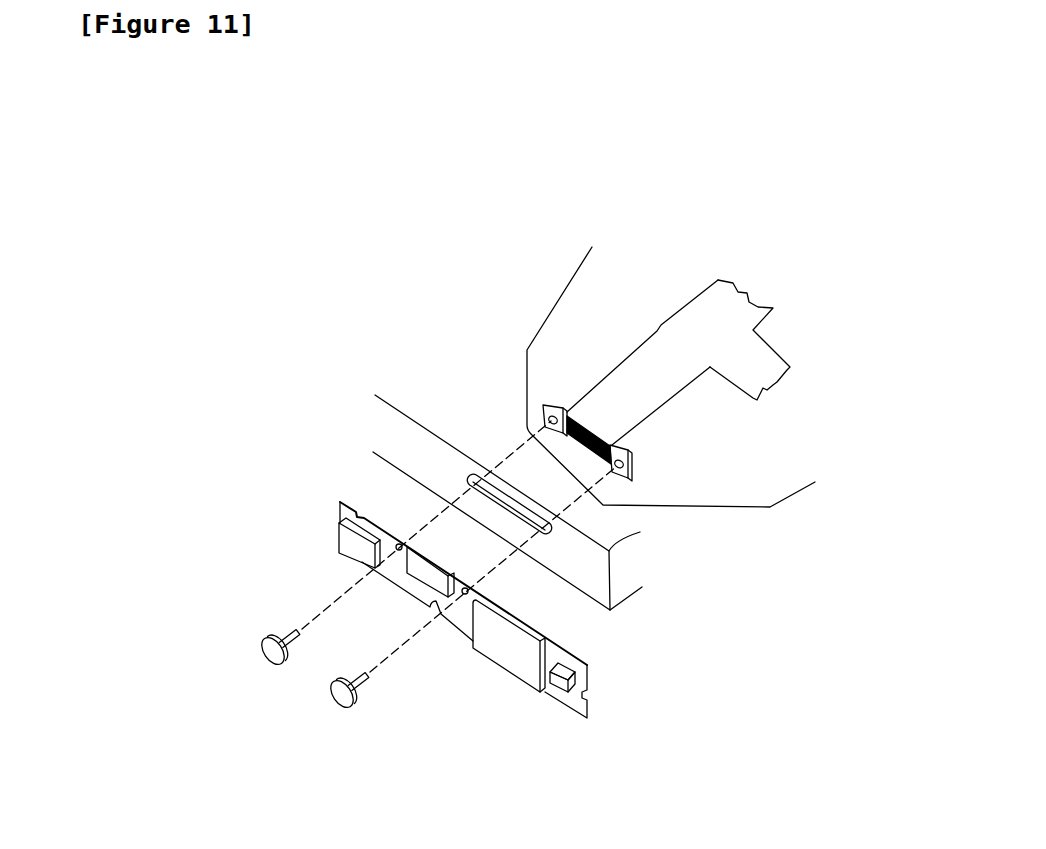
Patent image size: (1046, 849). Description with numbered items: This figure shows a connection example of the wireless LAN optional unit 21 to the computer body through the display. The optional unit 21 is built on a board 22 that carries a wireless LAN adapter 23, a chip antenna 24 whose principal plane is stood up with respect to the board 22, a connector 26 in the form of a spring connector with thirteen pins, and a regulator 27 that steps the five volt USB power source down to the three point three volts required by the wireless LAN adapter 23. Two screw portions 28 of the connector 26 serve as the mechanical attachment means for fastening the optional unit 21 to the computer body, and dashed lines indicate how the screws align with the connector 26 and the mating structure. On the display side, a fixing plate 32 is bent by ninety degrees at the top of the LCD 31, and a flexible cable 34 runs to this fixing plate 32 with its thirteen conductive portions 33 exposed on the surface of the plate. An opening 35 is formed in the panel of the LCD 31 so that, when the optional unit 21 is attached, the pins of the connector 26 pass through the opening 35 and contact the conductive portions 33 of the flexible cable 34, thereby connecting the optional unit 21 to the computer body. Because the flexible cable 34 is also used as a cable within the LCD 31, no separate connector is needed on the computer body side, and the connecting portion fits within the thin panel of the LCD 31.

The wireless LAN optional unit 21 is at (474, 611).
The board 22 is at (347, 501).
The wireless LAN adapter 23 is at (505, 648).
The chip antenna 24 is at (548, 695).
The connector 26 is at (418, 557).
The regulator 27 is at (338, 545).
The screw portions 28 is at (337, 700).
The LCD 31 is at (627, 573).
The fixing plate 32 is at (633, 468).
The conductive portions 33 is at (583, 441).
The flexible cable 34 is at (713, 333).
The opening 35 is at (503, 502).